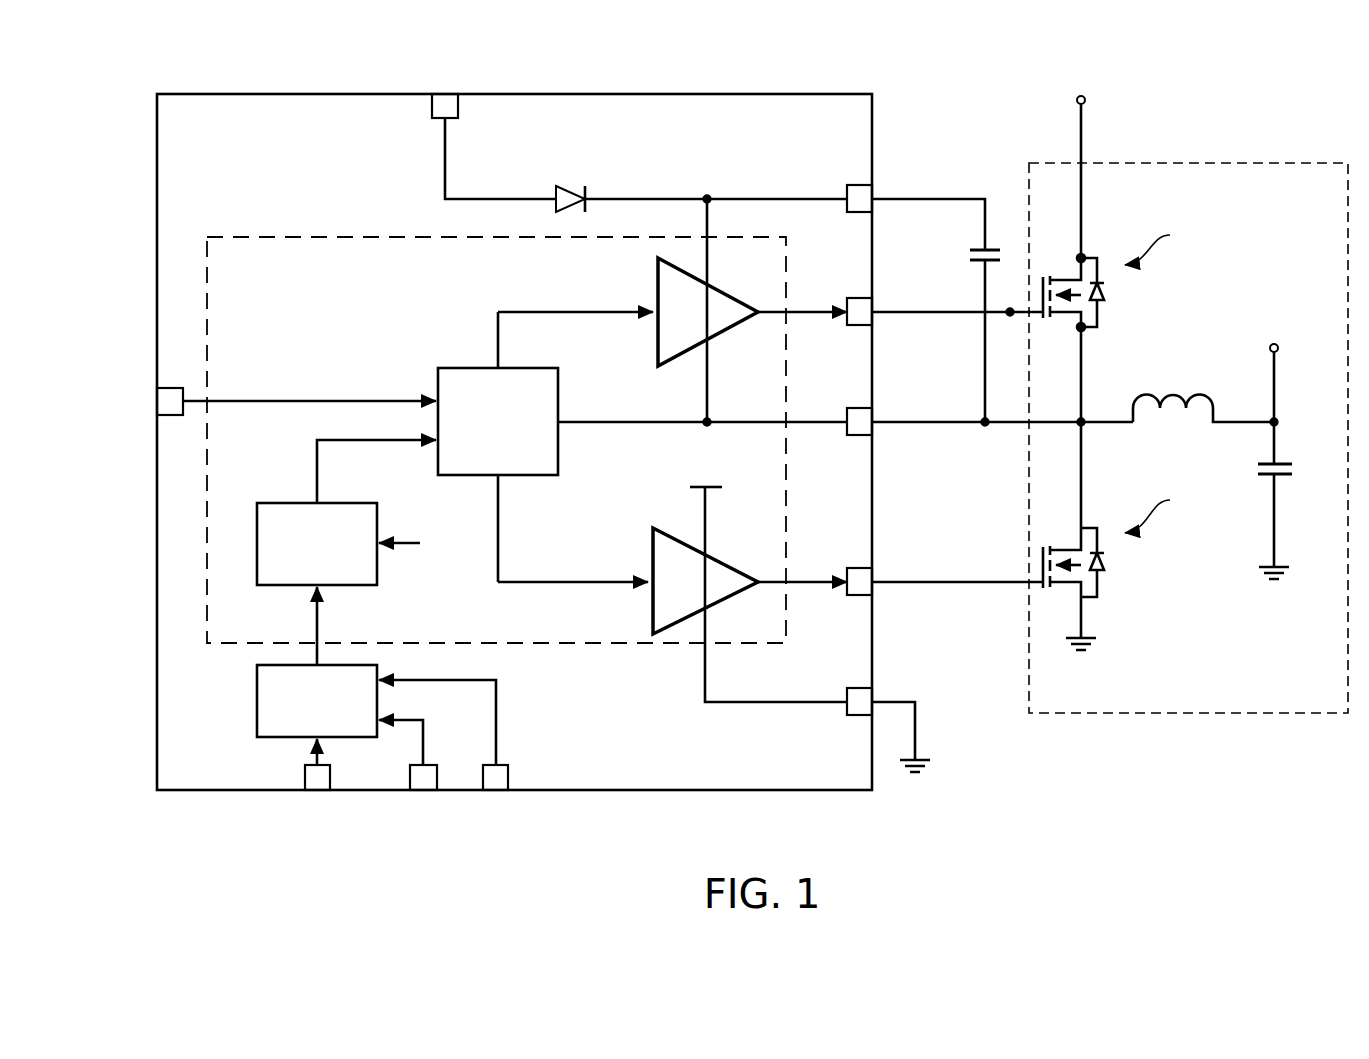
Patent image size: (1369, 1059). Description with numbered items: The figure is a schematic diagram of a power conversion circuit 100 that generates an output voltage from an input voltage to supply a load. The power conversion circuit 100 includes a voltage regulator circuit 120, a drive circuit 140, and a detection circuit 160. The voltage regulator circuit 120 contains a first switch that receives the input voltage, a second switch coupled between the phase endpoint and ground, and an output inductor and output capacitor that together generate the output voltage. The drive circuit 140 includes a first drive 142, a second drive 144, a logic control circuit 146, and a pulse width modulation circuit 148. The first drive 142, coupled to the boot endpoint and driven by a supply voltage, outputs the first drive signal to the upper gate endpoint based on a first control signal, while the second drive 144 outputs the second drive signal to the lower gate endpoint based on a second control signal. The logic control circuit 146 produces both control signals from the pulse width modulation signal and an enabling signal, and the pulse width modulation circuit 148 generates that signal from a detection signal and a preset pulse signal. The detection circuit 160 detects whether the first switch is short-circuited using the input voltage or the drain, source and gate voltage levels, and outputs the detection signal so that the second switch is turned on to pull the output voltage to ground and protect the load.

The power conversion circuit 100 is at (186, 41).
The voltage regulator circuit 120 is at (1188, 162).
The drive circuit 140 is at (370, 237).
The first drive 142 is at (682, 326).
The second drive 144 is at (682, 594).
The logic control circuit 146 is at (438, 378).
The pulse width modulation (PWM) circuit 148 is at (378, 578).
The detection circuit 160 is at (257, 705).